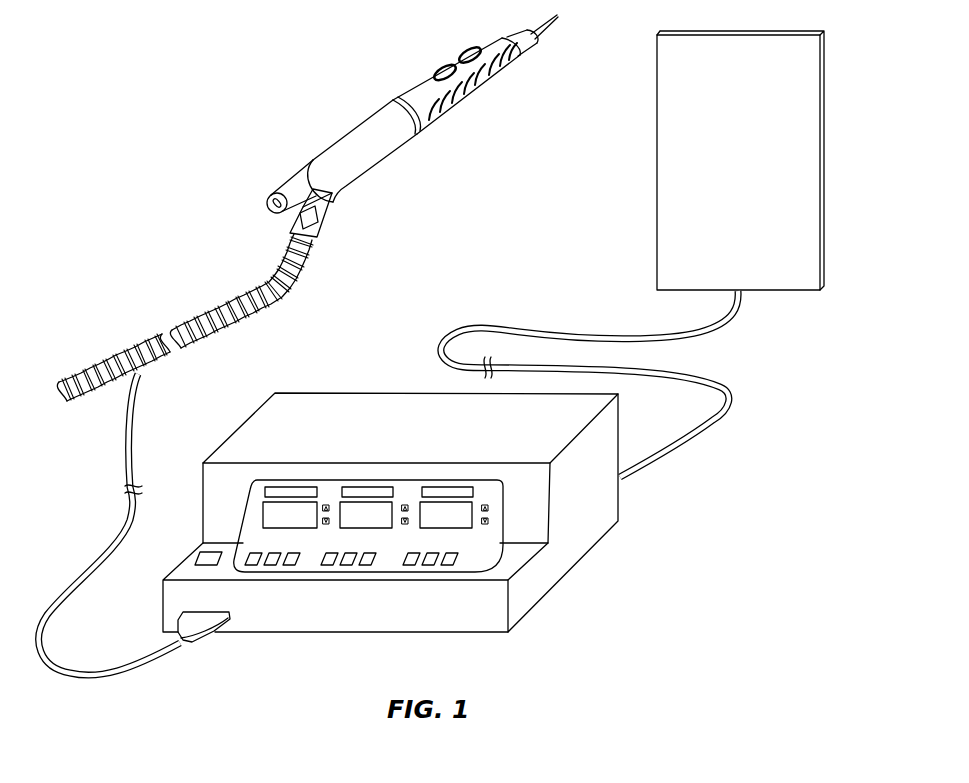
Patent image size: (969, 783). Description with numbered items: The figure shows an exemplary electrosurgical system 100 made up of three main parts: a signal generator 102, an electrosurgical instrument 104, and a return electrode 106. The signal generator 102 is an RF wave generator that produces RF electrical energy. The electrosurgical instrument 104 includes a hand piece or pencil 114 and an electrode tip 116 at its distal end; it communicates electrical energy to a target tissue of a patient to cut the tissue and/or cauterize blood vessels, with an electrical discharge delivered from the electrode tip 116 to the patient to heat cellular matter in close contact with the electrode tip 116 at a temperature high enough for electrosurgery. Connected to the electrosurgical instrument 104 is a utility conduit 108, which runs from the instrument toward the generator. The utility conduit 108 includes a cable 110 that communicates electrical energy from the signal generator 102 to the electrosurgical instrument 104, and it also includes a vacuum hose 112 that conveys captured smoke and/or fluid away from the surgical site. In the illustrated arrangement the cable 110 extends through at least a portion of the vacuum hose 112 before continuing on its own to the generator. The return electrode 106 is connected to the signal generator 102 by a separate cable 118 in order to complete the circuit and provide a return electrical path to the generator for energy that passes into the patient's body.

The electrosurgical system 100 is at (247, 83).
The signal generator 102 is at (590, 503).
The electrosurgical instrument 104 is at (378, 90).
The return electrode 106 is at (788, 128).
The utility conduit 108 is at (267, 287).
The cable 110 is at (127, 535).
The vacuum hose 112 is at (80, 380).
The hand piece or pencil 114 is at (370, 140).
The electrode tip 116 is at (557, 15).
The cable 118 is at (737, 320).